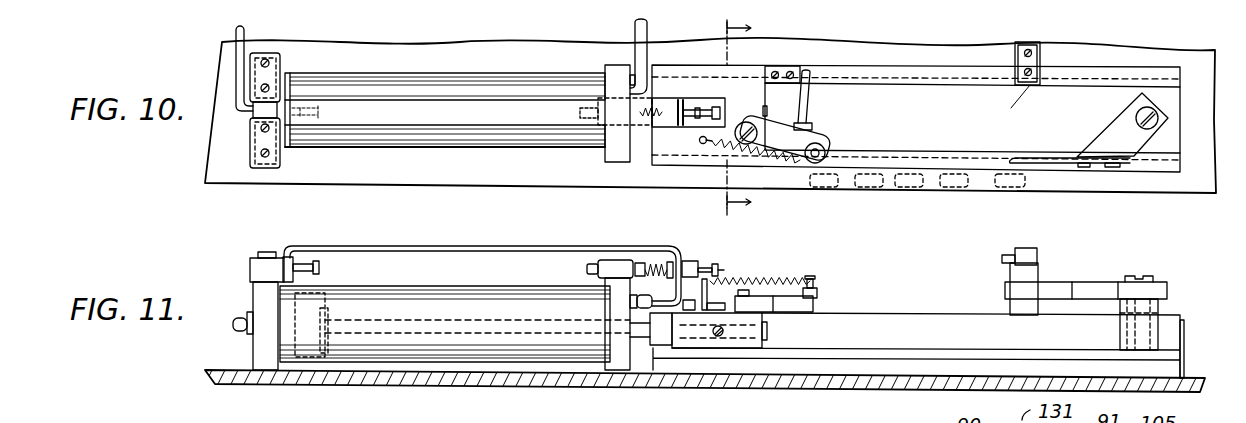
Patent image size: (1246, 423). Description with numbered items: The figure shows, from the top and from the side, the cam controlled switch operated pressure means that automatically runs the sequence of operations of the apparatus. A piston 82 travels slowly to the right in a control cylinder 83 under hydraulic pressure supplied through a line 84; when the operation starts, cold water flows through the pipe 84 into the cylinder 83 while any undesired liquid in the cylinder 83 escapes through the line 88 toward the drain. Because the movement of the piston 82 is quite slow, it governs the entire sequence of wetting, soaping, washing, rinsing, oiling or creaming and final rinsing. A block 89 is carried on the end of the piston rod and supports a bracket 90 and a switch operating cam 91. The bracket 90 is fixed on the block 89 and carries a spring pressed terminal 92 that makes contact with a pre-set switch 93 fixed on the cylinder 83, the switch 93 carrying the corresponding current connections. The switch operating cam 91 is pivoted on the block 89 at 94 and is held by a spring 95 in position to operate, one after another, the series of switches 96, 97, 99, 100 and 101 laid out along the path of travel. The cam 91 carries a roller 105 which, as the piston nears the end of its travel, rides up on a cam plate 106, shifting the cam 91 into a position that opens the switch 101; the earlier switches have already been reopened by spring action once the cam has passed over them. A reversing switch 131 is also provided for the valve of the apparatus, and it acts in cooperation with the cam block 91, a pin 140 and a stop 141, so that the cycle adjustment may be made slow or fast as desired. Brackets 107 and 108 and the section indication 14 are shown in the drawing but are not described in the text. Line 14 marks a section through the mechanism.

In FIG. 11, the piston 82 is at (337, 368).
In FIG. 10, the control cylinder 83 is at (413, 150).
In FIG. 11, the control cylinder 83 is at (420, 298).
In FIG. 10, the line 84 is at (234, 51).
In FIG. 11, the line 84 is at (236, 326).
In FIG. 10, the line 88 is at (648, 27).
In FIG. 11, the line 88 is at (645, 305).
In FIG. 10, the block 89 is at (658, 138).
In FIG. 11, the block 89 is at (700, 340).
In FIG. 10, the bracket 90 is at (478, 103).
In FIG. 11, the bracket 90 is at (488, 248).
In FIG. 10, the switch operating cam 91 is at (813, 132).
In FIG. 11, the switch operating cam 91 is at (820, 300).
In FIG. 11, the spring pressed terminal 92 is at (640, 262).
In FIG. 10, the pre-set switch 93 is at (608, 88).
In FIG. 11, the pre-set switch 93 is at (612, 260).
In FIG. 10, the pivot 94 is at (743, 121).
In FIG. 11, the pivot 94 is at (748, 290).
In FIG. 10, the spring 95 is at (723, 147).
In FIG. 11, the spring 95 is at (768, 277).
In FIG. 10, the switch 96 is at (822, 188).
In FIG. 10, the switch 97 is at (872, 188).
In FIG. 10, the switch 99 is at (915, 188).
In FIG. 10, the switch 100 is at (962, 188).
In FIG. 10, the switch 101 is at (1022, 188).
In FIG. 10, the roller 105 is at (818, 135).
In FIG. 11, the roller 105 is at (820, 292).
In FIG. 10, the cam plate 106 is at (1108, 128).
In FIG. 11, the cam plate 106 is at (1110, 281).
In FIG. 10, the bracket 107 is at (282, 62).
In FIG. 11, the bracket 107 is at (301, 269).
In FIG. 10, the bracket 108 is at (282, 165).
In FIG. 11, the bracket 108 is at (252, 271).
In FIG. 10, the reversing switch 131 is at (1023, 41).
In FIG. 11, the reversing switch 131 is at (1031, 257).
In FIG. 10, the pin 140 is at (810, 108).
In FIG. 10, the stop 141 is at (797, 67).
In FIG. 10, the section line 14 is at (754, 116).